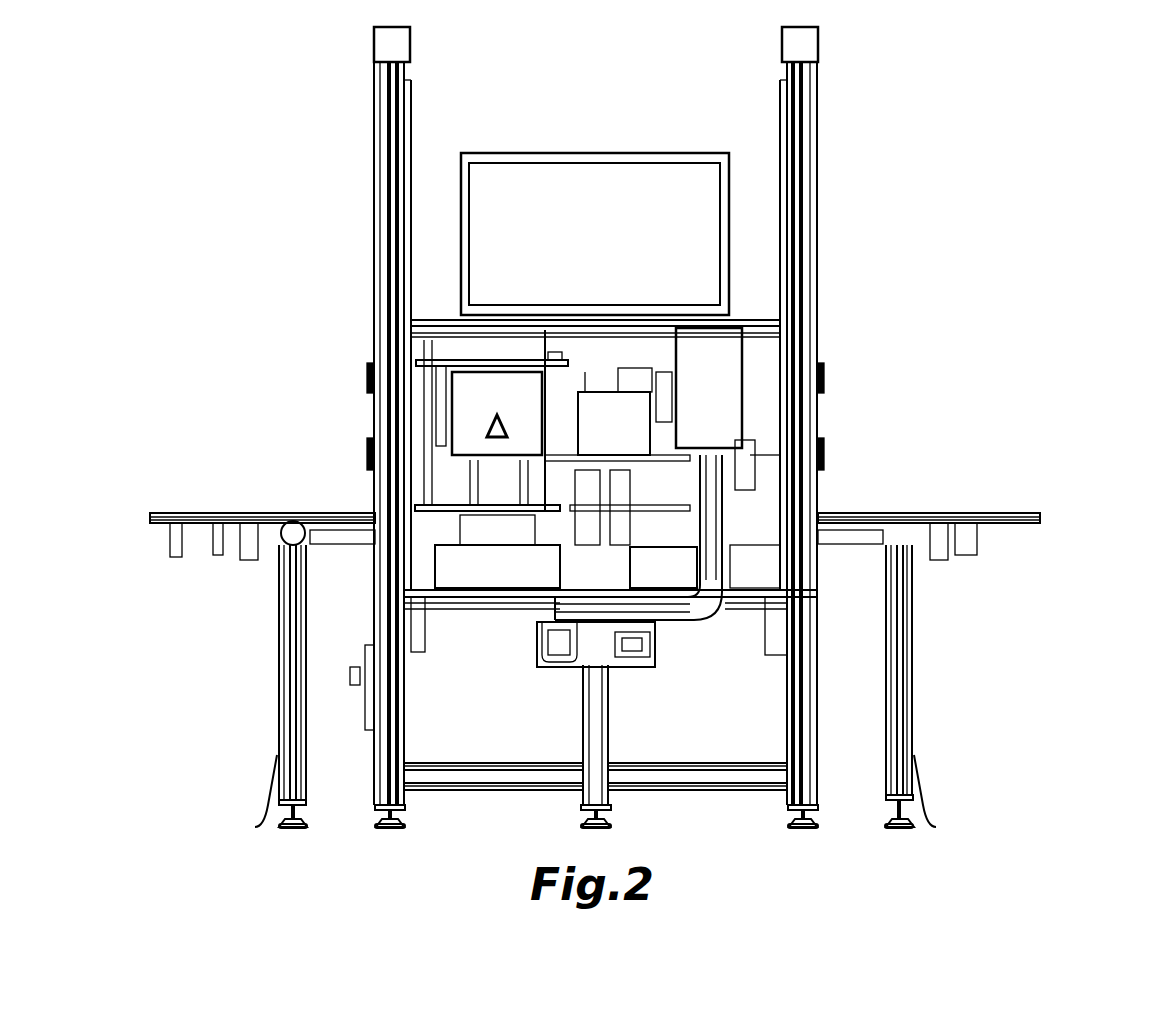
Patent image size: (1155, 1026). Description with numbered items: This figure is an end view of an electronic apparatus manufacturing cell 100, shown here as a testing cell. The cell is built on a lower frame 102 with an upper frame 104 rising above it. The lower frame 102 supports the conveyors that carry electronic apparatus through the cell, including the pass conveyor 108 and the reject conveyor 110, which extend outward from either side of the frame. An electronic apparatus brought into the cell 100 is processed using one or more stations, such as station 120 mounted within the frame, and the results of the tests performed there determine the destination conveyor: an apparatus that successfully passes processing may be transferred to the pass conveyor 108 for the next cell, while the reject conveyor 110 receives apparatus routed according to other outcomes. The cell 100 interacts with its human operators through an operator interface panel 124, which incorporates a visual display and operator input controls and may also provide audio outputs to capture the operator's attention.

The electronic apparatus manufacturing cell 100 is at (232, 129).
The lower frame 102 is at (583, 718).
The upper frame 104 is at (372, 351).
The pass conveyor 108 is at (150, 516).
The reject conveyor 110 is at (1040, 516).
The station 120 is at (520, 404).
The operator interface panel 124 is at (732, 399).